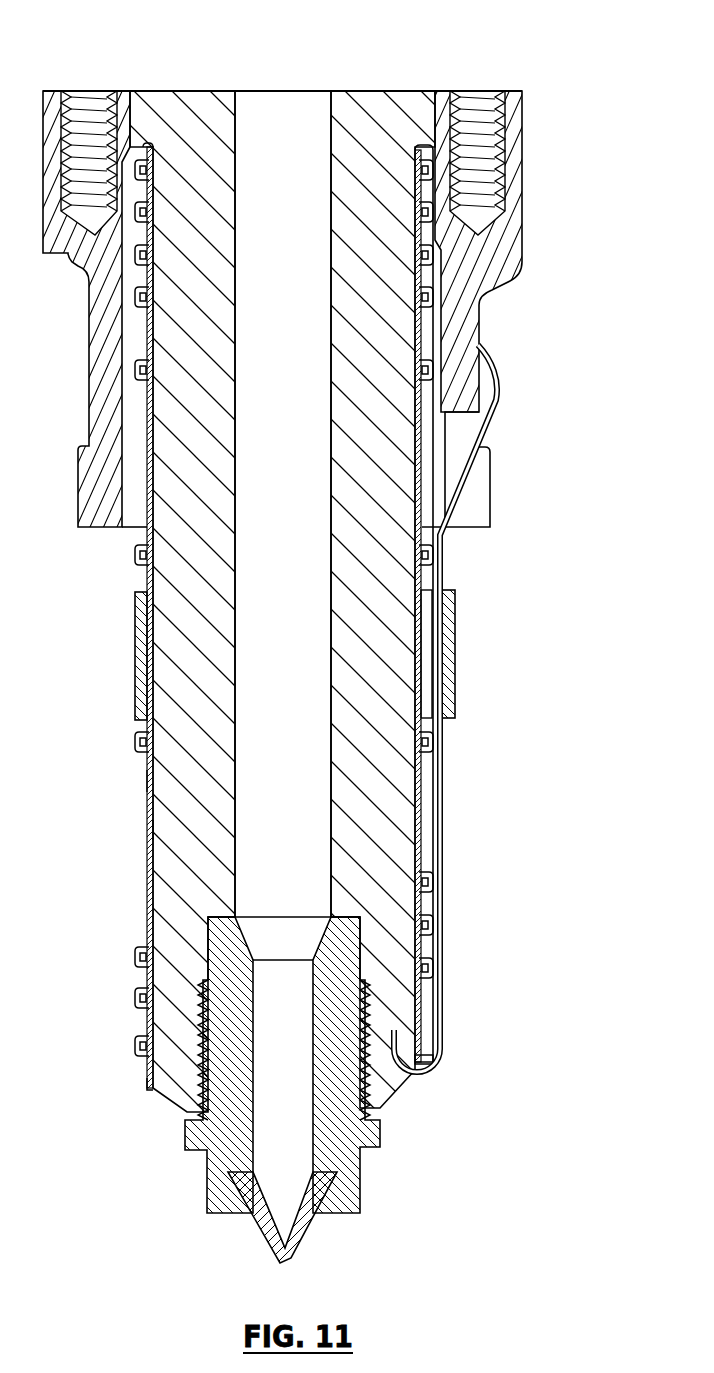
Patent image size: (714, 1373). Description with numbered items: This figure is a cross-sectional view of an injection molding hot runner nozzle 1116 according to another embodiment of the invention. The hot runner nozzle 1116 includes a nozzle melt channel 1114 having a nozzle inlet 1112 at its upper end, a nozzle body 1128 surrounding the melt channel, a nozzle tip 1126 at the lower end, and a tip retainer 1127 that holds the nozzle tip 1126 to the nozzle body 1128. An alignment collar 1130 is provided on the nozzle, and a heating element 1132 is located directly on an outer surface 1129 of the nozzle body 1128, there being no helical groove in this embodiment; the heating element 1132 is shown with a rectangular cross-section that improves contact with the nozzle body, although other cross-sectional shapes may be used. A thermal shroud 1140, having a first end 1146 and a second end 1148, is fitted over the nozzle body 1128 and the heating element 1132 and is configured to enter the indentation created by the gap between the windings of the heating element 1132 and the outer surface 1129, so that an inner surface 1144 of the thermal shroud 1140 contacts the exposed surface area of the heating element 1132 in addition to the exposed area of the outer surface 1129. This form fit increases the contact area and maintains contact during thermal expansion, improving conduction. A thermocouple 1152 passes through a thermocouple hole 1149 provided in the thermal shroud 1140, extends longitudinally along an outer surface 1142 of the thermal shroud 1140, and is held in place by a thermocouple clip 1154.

The nozzle inlet 1112 is at (287, 91).
The nozzle melt channel 1114 is at (290, 462).
The hot runner nozzle 1116 is at (574, 212).
The nozzle tip 1126 is at (276, 1221).
The tip retainer 1127 is at (192, 1148).
The nozzle body 1128 is at (390, 808).
The outer surface of nozzle body 1129 is at (150, 868).
The alignment collar 1130 is at (478, 276).
The heating element 1132 is at (436, 885).
The thermal shroud 1140 is at (148, 806).
The outer surface of thermal shroud 1142 is at (150, 830).
The inner surface of thermal shroud 1144 is at (155, 775).
The first end of thermal shroud 1146 is at (423, 146).
The second end of thermal shroud 1148 is at (148, 1083).
The thermocouple hole 1149 is at (440, 1090).
The thermocouple 1152 is at (444, 1051).
The thermocouple clip 1154 is at (456, 636).